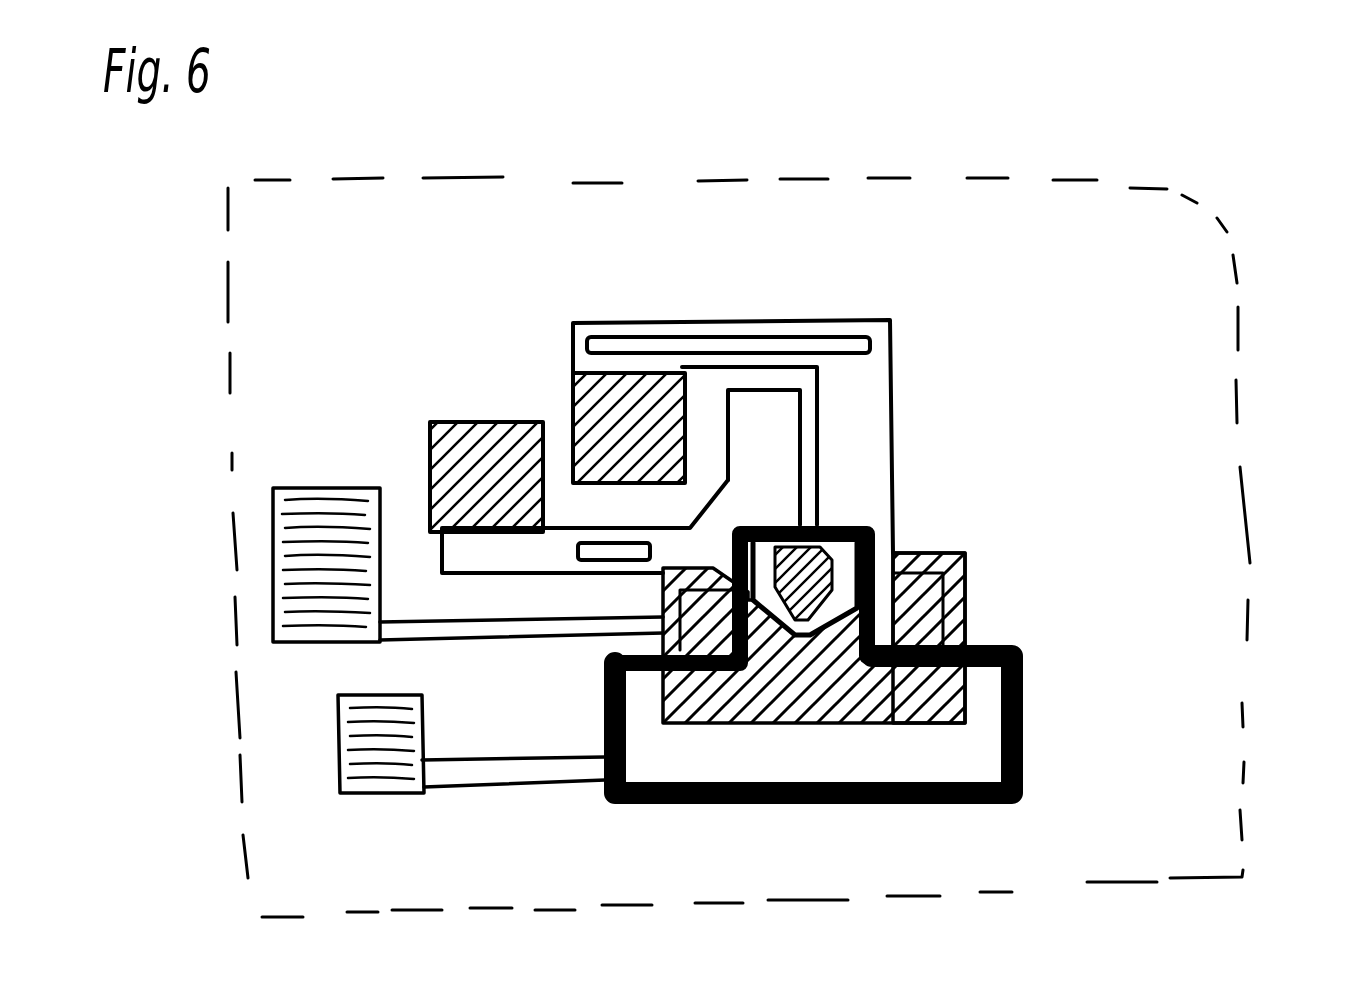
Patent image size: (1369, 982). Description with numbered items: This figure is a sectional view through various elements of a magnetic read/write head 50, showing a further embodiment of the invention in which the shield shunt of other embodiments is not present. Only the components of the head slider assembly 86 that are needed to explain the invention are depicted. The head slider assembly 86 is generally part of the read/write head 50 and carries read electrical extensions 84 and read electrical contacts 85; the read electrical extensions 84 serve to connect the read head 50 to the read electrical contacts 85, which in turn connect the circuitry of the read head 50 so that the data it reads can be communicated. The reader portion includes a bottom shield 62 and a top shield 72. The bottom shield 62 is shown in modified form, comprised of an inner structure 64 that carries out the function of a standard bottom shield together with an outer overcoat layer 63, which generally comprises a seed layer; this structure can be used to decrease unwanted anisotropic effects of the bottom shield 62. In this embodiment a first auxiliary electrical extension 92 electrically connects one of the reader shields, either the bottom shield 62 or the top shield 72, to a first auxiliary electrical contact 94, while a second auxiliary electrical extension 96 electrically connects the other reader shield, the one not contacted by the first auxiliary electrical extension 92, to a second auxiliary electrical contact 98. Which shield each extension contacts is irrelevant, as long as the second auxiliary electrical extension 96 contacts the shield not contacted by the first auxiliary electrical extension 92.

The magnetic read/write head 50 is at (1262, 443).
The bottom shield 62 is at (953, 532).
The outer overcoat layer 63 is at (963, 577).
The inner structure 64 is at (963, 626).
The top shield 72 is at (1027, 723).
The read electrical extension 84 is at (730, 345).
The read electrical contact 85 is at (440, 427).
The head slider assembly 86 is at (1020, 237).
The first auxiliary electrical extension 92 is at (441, 640).
The first auxiliary electrical contact 94 is at (292, 507).
The second auxiliary electrical extension 96 is at (460, 775).
The second auxiliary electrical contact 98 is at (350, 790).